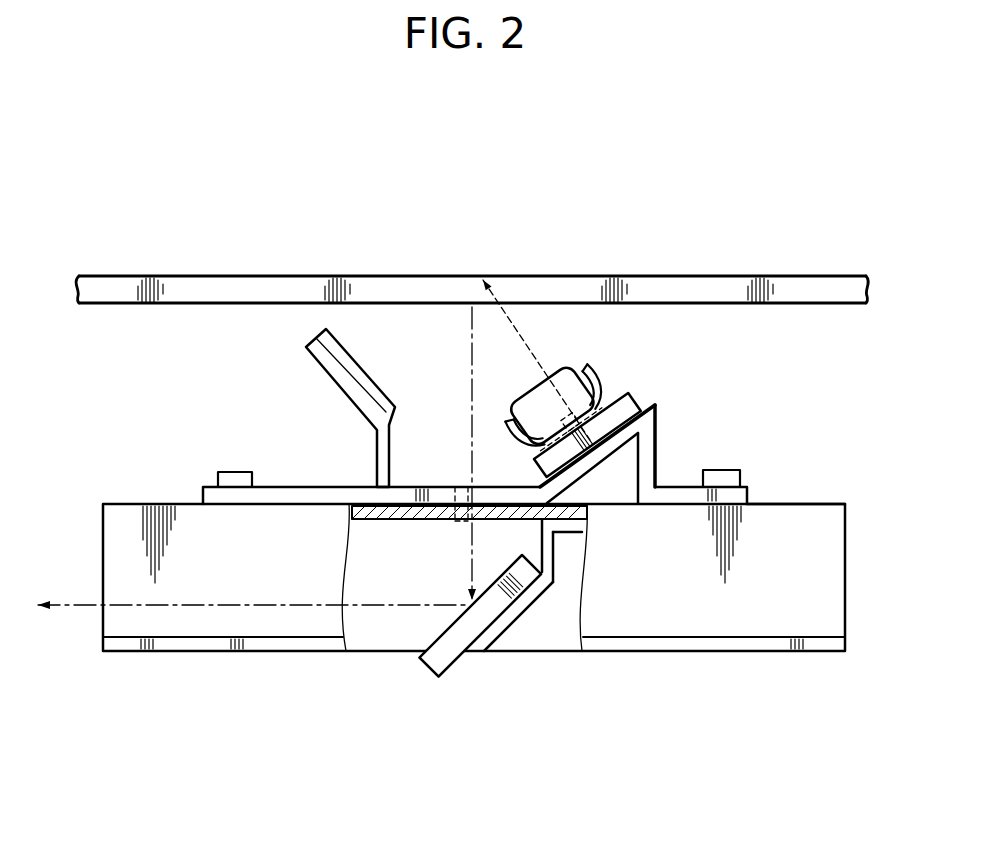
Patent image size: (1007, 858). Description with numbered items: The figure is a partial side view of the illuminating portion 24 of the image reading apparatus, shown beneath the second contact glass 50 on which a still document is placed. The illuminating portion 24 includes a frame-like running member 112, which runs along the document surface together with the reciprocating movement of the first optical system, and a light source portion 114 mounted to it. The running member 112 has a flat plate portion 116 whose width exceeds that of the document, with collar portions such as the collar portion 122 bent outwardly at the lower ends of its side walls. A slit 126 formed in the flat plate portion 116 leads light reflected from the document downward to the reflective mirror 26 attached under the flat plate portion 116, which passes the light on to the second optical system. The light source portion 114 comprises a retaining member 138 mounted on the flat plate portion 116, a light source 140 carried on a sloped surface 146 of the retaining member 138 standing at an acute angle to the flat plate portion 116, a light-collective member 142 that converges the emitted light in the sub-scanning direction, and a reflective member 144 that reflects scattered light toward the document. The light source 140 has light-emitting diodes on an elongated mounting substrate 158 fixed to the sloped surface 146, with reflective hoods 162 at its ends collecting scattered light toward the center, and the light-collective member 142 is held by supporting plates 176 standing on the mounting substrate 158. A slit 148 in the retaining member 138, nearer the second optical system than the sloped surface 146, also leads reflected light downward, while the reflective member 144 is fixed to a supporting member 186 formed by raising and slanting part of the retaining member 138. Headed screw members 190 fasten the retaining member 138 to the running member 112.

The illuminating portion 24 is at (137, 480).
The reflective mirror 26 is at (432, 664).
The second contact glass 50 is at (804, 286).
The running member 112 is at (812, 565).
The light source portion 114 is at (660, 418).
The flat plate portion 116 is at (810, 500).
The collar portion 122 is at (735, 642).
The slit 126 is at (462, 524).
The retaining member 138 is at (312, 487).
The light source 140 is at (625, 390).
The light-collective member 142 is at (544, 350).
The reflective member 144 is at (348, 360).
The sloped surface 146 is at (597, 462).
The slit 148 is at (466, 505).
The mounting substrate 158 is at (637, 408).
The reflective hood 162 is at (507, 440).
The supporting plate 176 is at (572, 365).
The supporting member 186 is at (330, 378).
The screw member 190 is at (232, 472).